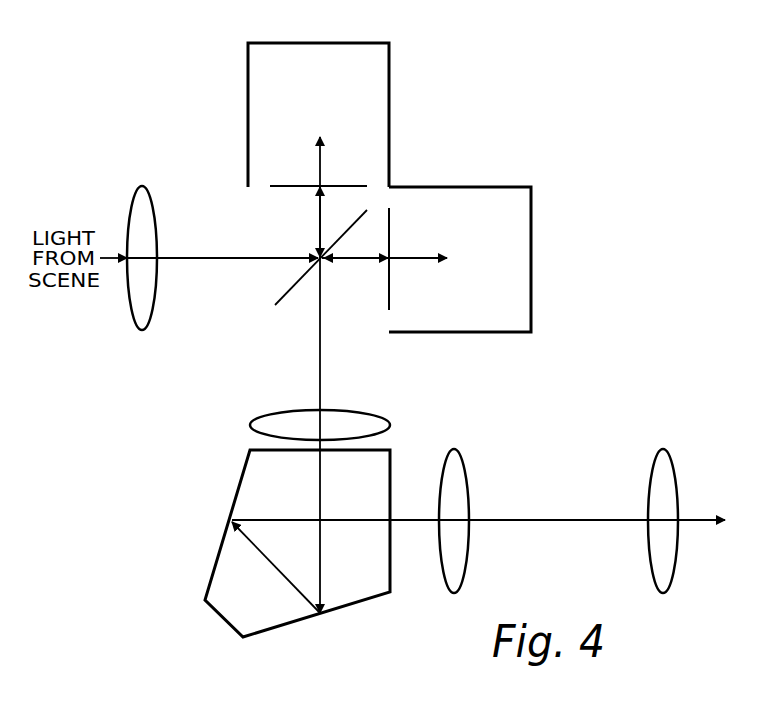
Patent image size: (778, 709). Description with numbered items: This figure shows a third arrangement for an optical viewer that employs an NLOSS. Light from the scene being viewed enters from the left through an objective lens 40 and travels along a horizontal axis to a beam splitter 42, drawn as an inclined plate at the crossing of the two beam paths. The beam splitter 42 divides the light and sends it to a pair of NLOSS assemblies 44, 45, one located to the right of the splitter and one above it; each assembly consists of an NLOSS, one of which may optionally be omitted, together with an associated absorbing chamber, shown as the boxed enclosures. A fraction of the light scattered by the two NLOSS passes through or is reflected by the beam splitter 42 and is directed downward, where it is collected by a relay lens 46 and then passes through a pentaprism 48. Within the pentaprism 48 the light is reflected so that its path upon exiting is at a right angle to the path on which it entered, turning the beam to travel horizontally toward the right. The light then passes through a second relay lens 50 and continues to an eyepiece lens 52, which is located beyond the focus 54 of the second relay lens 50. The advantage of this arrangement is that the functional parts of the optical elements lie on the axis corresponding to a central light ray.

The objective lens 40 is at (141, 187).
The beam splitter 42 is at (287, 272).
The NLOSS assembly 44 is at (389, 237).
The NLOSS assembly 45 is at (345, 187).
The relay lens 46 is at (273, 412).
The pentaprism 48 is at (195, 552).
The second relay lens 50 is at (454, 450).
The eyepiece lens 52 is at (663, 450).
The focus of the second relay lens 54 is at (583, 518).